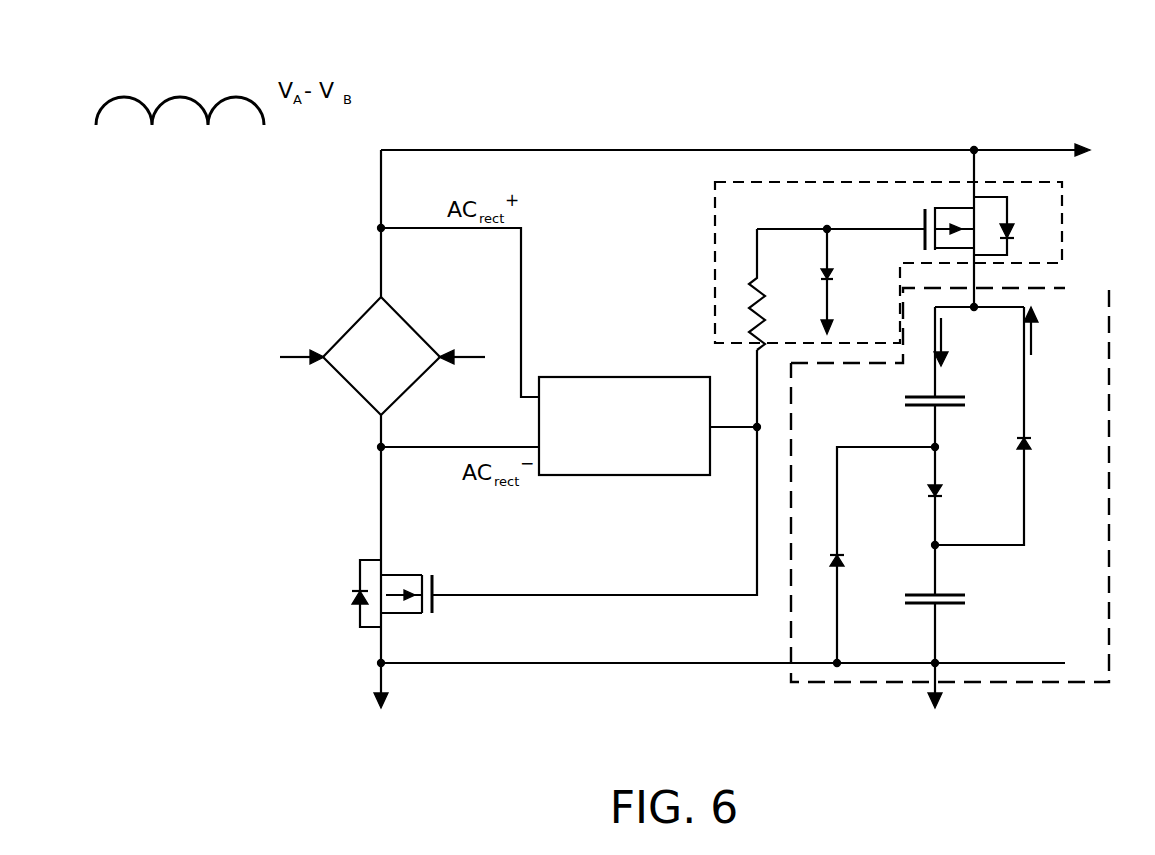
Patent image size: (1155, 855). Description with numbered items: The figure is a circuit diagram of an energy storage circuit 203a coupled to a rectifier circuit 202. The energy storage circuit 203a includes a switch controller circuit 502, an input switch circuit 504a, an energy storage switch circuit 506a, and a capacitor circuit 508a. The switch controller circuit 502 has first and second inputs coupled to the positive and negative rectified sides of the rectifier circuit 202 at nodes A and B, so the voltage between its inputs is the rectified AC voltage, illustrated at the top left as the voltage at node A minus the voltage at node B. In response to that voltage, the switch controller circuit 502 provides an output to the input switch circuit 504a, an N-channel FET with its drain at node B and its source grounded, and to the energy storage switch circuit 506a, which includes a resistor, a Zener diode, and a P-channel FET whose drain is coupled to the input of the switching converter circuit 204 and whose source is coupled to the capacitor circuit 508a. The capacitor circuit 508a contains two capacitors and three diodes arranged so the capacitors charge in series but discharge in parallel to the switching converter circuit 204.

The energy storage circuit 203a is at (702, 56).
The switching converter circuit 204 is at (1033, 106).
The rectifier circuit 202 is at (355, 322).
The switch controller circuit 502 is at (624, 377).
The input switch circuit 504a is at (466, 566).
The energy storage switch circuit 506a is at (715, 228).
The capacitor circuit 508a is at (791, 641).